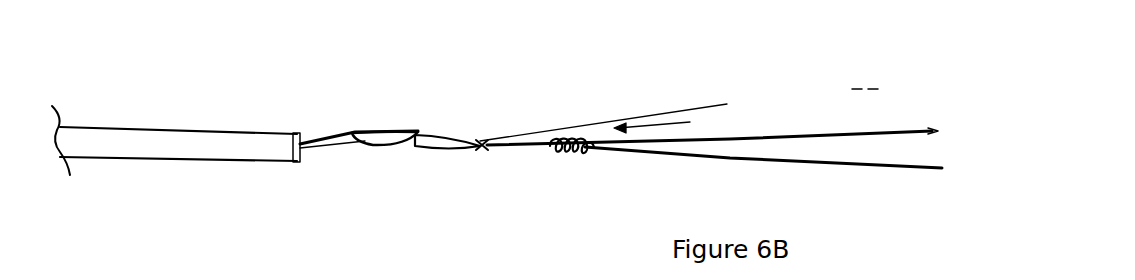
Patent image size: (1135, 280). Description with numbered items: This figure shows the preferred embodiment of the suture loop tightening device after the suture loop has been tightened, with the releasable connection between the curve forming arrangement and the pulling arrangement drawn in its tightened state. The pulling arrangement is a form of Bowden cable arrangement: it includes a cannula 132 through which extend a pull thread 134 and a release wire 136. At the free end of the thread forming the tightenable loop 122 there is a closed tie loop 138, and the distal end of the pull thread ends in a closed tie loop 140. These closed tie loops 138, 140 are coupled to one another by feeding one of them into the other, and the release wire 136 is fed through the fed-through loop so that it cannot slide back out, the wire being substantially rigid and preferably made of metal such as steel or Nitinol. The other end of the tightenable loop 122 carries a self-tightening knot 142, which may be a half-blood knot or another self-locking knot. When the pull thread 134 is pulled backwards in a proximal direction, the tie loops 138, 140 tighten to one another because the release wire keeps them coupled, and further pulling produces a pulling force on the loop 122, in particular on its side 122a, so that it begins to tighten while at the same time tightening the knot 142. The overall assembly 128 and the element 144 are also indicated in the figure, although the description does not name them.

The tightenable loop 122 is at (828, 163).
The side of the tightenable loop 122a is at (657, 145).
The deployment assembly 128 is at (560, 189).
The cannula 132 is at (122, 140).
The pull thread 134 is at (321, 155).
The release wire 136 is at (332, 128).
The closed tie loop 138 is at (440, 152).
The closed tie loop 140 is at (415, 132).
The self-tightening knot 142 is at (588, 152).
The tether line 144 is at (657, 129).